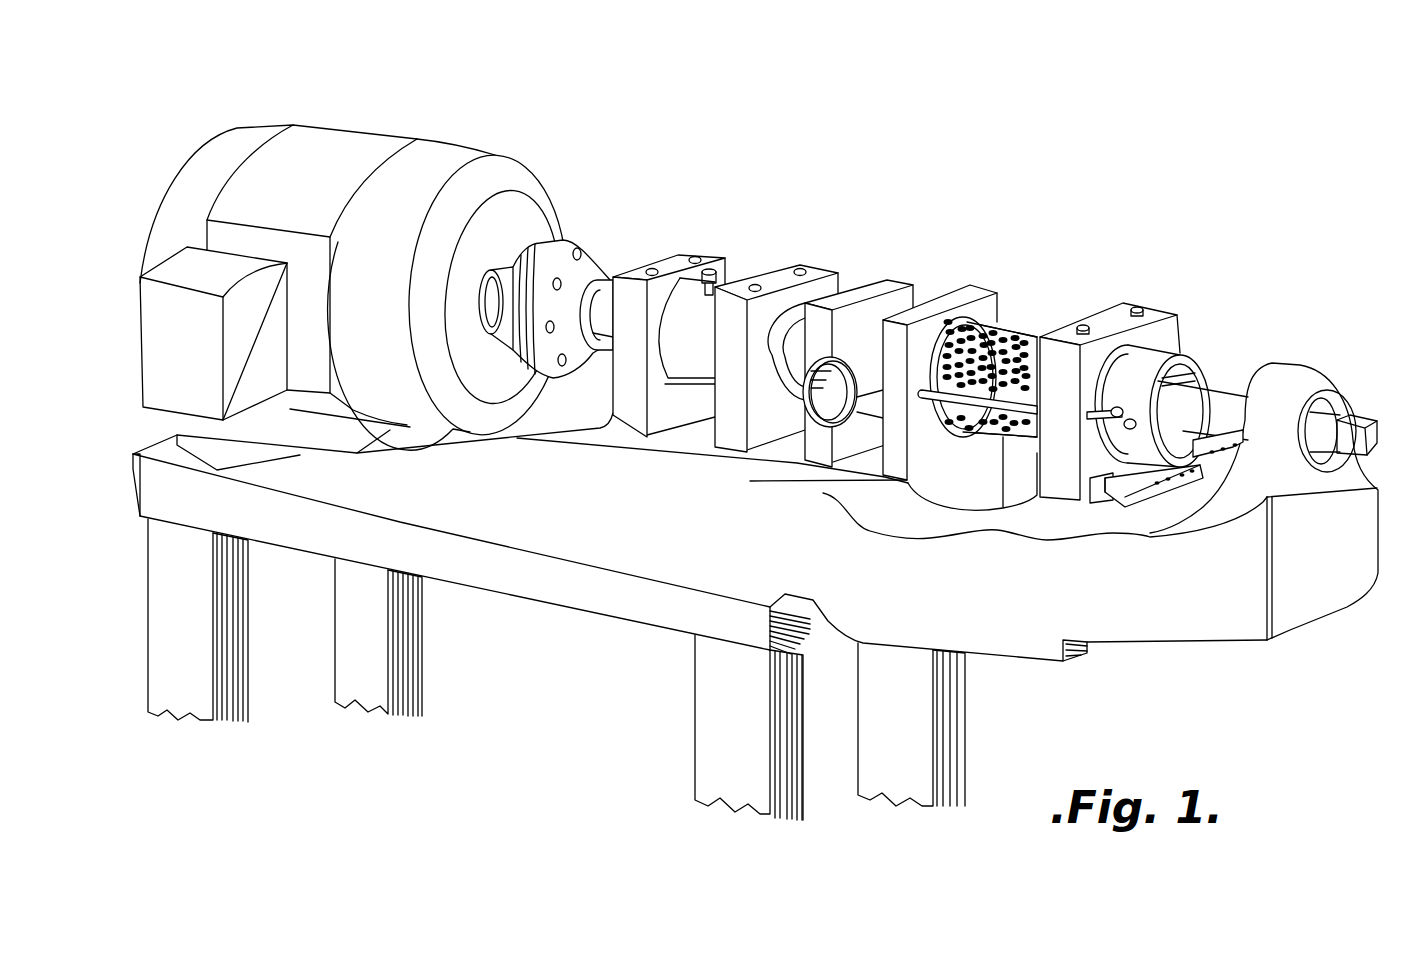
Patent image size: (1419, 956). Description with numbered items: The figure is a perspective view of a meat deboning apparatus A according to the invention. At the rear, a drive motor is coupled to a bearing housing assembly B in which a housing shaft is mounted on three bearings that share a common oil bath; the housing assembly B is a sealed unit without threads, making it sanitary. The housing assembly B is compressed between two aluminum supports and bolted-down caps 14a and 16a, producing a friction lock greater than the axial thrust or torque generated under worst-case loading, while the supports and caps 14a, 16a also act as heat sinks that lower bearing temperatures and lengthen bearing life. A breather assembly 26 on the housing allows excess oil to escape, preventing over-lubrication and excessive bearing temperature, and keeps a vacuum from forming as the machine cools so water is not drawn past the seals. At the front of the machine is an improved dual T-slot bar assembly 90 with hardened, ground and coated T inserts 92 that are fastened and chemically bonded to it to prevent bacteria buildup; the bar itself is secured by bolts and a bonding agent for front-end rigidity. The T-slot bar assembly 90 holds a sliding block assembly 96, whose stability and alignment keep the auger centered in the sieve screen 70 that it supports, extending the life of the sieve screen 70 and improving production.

The meat deboning apparatus A is at (569, 170).
The bearing housing assembly B is at (830, 325).
The cap 14a is at (693, 250).
The breather assembly 26 is at (712, 269).
The cap 16a is at (780, 257).
The sieve screen 70 is at (1025, 327).
The sliding block assembly 96 is at (1157, 302).
The dual T-slot bar assembly 90 is at (1217, 437).
The T insert 92 is at (1070, 497).